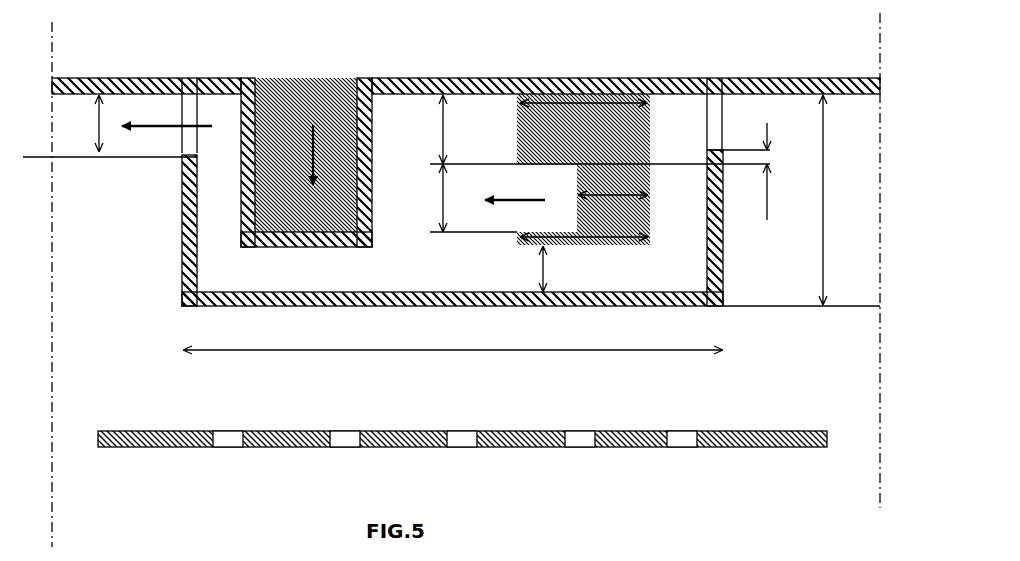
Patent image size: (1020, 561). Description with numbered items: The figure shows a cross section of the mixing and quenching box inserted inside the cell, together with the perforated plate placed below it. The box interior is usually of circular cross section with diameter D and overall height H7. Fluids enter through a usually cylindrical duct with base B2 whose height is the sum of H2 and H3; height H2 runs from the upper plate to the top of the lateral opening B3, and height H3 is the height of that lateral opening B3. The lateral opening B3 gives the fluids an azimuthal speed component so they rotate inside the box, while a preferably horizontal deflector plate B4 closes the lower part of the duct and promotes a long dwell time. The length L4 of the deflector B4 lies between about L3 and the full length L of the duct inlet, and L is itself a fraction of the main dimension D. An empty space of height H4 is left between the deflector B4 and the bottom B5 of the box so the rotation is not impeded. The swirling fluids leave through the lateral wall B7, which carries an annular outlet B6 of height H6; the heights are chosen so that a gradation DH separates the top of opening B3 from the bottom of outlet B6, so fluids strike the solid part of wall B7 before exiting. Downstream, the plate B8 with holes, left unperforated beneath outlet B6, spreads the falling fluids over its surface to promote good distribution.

The height of annular outlet H6 is at (82, 123).
The height between upper plate and lateral opening H2 is at (428, 129).
The height of lateral opening H3 is at (428, 198).
The height of empty space under deflector H4 is at (523, 269).
The height of box H7 is at (841, 200).
The gradation DH is at (789, 171).
The duct base B2 is at (583, 129).
The lateral opening B3 is at (515, 187).
The deflector plate B4 is at (583, 222).
The bottom of box B5 is at (531, 316).
The annular outlet B6 is at (732, 114).
The lateral wall B7 is at (737, 228).
The perforated plate B8 is at (462, 460).
The length of duct section inlet L is at (583, 116).
The length L3 is at (613, 184).
The length of deflector L4 is at (584, 228).
The diameter of box D is at (453, 365).